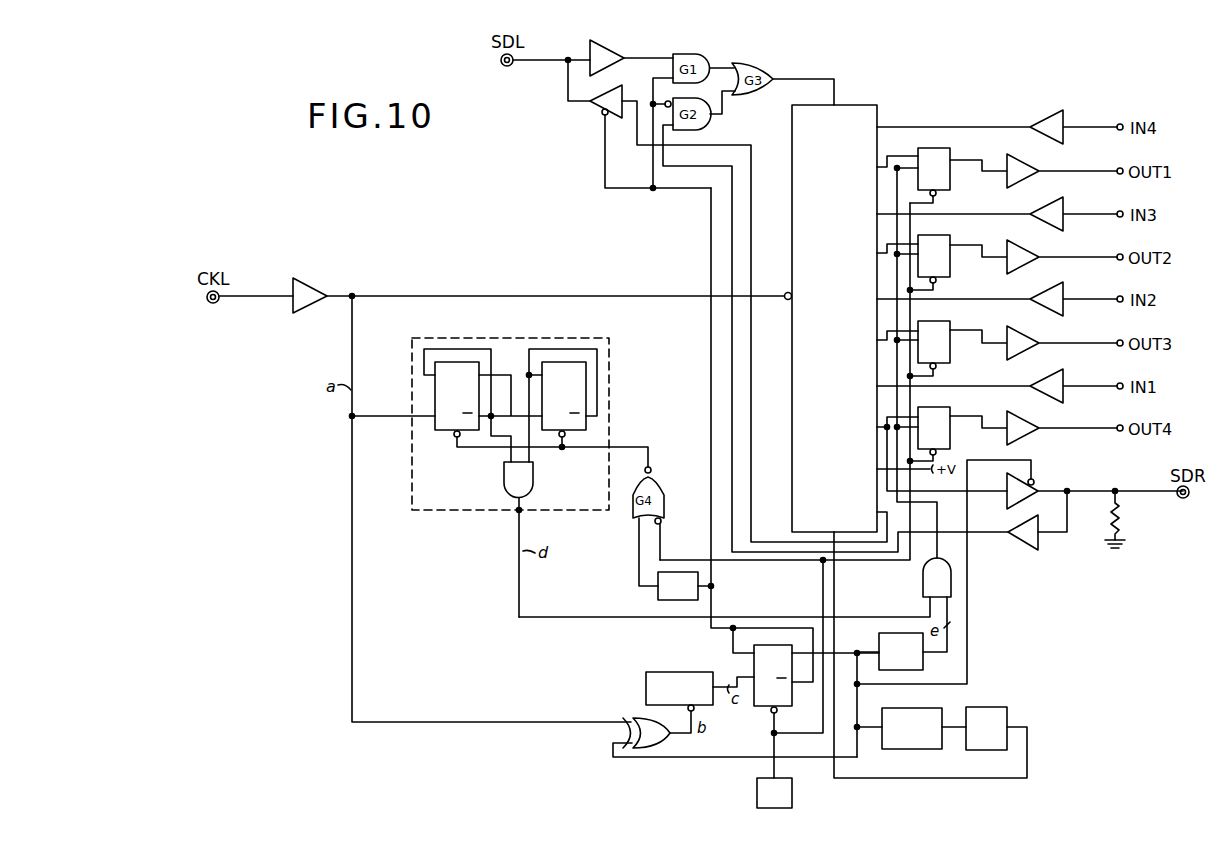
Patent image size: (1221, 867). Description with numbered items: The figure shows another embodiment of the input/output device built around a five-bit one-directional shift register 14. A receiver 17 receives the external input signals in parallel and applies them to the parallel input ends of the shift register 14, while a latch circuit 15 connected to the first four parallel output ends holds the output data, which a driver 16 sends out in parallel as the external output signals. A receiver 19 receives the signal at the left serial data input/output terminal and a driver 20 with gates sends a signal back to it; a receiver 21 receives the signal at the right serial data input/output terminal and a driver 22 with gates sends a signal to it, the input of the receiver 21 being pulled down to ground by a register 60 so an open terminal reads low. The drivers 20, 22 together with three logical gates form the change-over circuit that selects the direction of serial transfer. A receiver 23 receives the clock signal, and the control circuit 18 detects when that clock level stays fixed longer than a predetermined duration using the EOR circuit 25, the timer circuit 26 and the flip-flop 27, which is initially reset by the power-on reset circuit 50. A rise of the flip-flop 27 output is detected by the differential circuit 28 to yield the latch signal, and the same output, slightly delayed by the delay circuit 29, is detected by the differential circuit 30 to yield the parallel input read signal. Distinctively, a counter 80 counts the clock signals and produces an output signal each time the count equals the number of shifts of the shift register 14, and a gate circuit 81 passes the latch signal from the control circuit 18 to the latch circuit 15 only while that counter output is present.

The shift register 14 is at (861, 106).
The latch circuit 15 is at (951, 153).
The driver 16 is at (1025, 163).
The receiver 17 is at (1066, 112).
The control circuit 18 is at (975, 701).
The receiver 19 is at (631, 54).
The driver with gates 20 is at (599, 104).
The receiver 21 is at (1040, 542).
The driver with gates 22 is at (1034, 479).
The receiver 23 is at (313, 289).
The EOR circuit 25 is at (631, 718).
The timer circuit 26 is at (649, 671).
The flip-flop 27 is at (794, 703).
The differential circuit 28 is at (924, 664).
The delay circuit 29 is at (913, 750).
The differential circuit 30 is at (993, 750).
The power-on reset circuit 50 is at (788, 793).
The register 60 is at (1124, 523).
The counter 80 is at (479, 516).
The gate circuit 81 is at (921, 584).